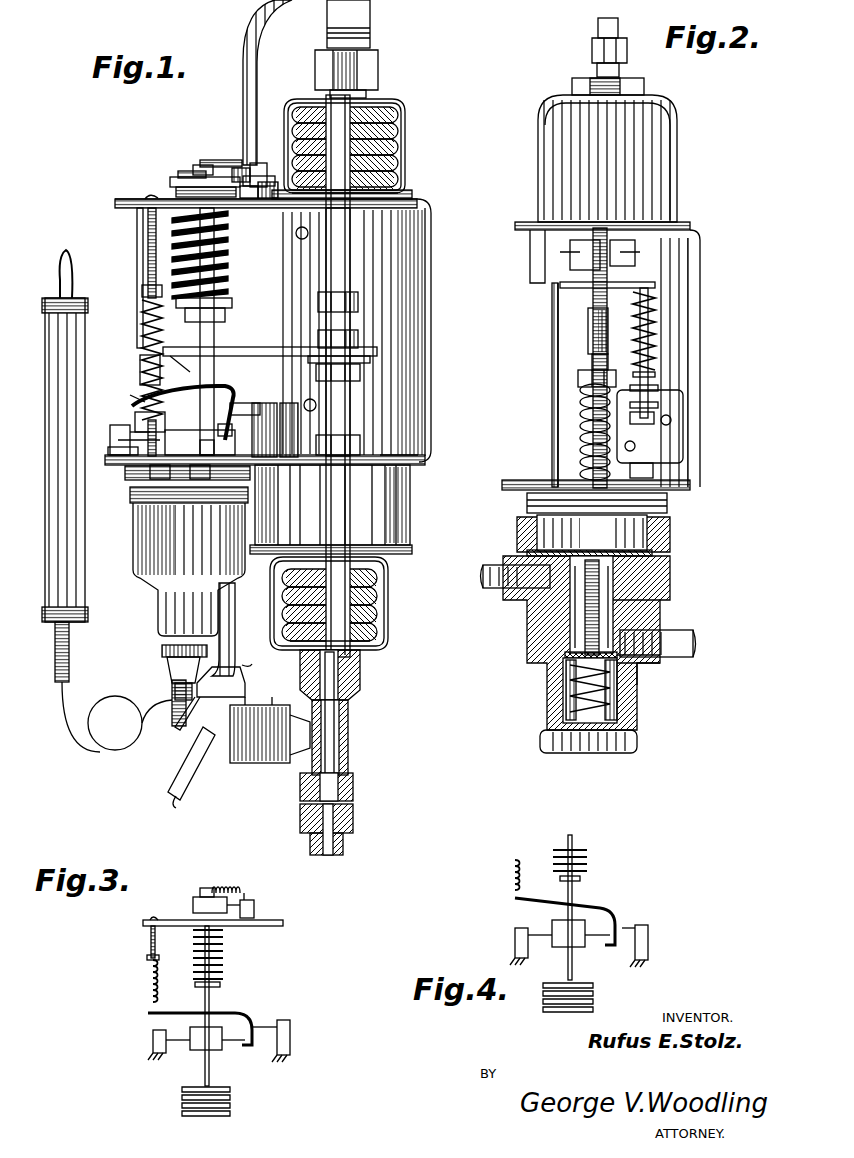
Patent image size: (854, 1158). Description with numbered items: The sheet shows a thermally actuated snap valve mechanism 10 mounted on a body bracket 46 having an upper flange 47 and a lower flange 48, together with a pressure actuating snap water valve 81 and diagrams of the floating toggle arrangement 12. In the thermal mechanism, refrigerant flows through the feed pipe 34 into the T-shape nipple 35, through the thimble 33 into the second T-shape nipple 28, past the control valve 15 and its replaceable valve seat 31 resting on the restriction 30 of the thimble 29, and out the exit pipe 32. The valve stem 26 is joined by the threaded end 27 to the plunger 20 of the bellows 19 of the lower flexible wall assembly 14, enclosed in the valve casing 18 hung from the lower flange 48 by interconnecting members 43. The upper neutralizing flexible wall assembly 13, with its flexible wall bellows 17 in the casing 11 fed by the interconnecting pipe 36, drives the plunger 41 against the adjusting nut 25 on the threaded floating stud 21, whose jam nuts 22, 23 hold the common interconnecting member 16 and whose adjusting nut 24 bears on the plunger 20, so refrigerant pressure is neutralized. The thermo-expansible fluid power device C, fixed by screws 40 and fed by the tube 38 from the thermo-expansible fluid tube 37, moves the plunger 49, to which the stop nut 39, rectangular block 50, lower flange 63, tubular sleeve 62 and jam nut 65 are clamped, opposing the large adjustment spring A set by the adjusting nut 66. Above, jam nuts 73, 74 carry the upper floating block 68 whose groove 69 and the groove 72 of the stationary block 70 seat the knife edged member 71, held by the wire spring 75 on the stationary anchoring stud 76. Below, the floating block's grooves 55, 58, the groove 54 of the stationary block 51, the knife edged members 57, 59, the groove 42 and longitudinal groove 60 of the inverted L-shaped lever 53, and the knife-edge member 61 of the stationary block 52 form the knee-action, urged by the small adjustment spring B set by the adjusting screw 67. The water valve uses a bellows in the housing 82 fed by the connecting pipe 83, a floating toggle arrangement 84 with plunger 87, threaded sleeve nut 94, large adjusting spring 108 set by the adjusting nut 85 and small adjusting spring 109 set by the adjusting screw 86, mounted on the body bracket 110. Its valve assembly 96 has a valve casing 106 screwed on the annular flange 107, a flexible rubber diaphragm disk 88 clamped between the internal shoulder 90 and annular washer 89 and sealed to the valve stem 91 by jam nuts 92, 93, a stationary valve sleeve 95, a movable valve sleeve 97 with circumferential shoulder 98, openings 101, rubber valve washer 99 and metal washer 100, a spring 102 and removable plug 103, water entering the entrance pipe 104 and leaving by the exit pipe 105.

In FIG. 1, the thermally actuated snap valve mechanism 10 is at (420, 310).
In FIG. 1, the casing 11 is at (402, 106).
In FIG. 1, the floating toggle arrangement 12 is at (225, 348).
In FIG. 1, the upper neutralizing flexible wall assembly 13 is at (404, 130).
In FIG. 1, the lower flexible wall assembly 14 is at (386, 600).
In FIG. 1, the control valve 15 is at (334, 772).
In FIG. 1, the common interconnecting member 16 is at (262, 350).
In FIG. 1, the flexible wall bellows 17 is at (396, 158).
In FIG. 1, the valve casing 18 is at (392, 578).
In FIG. 1, the bellows 19 is at (380, 636).
In FIG. 1, the plunger 20 is at (330, 510).
In FIG. 1, the threaded floating stud 21 is at (352, 400).
In FIG. 1, the jam nut 22 is at (362, 366).
In FIG. 1, the jam nut 23 is at (358, 332).
In FIG. 1, the adjusting nut 24 is at (360, 426).
In FIG. 1, the adjusting nut 25 is at (358, 300).
In FIG. 1, the valve stem 26 is at (348, 722).
In FIG. 1, the threaded end 27 is at (362, 660).
In FIG. 1, the second T-shape nipple 28 is at (345, 742).
In FIG. 1, the thimble 29 is at (352, 814).
In FIG. 1, the restriction 30 is at (352, 790).
In FIG. 1, the replaceable valve seat 31 is at (310, 788).
In FIG. 1, the exit pipe 32 is at (345, 840).
In FIG. 1, the thimble 33 is at (258, 760).
In FIG. 1, the feed pipe 34 is at (186, 795).
In FIG. 1, the T-shape nipple 35 is at (178, 730).
In FIG. 1, the interconnecting pipe 36 is at (258, 30).
In FIG. 1, the thermo-expansible fluid tube 37 is at (78, 336).
In FIG. 1, the tube 38 is at (100, 750).
In FIG. 1, the stop nut 39 is at (172, 478).
In FIG. 1, the screws 40 is at (106, 462).
In FIG. 1, the plunger 41 is at (351, 268).
In FIG. 1, the groove 42 is at (215, 444).
In FIG. 1, the interconnecting members 43 is at (410, 502).
In FIG. 1, the body bracket 46 is at (420, 290).
In FIG. 1, the upper flange 47 is at (400, 228).
In FIG. 1, the lower flange 48 is at (390, 455).
In FIG. 1, the plunger 49 is at (190, 478).
In FIG. 1, the rectangular block 50 is at (135, 416).
In FIG. 3, the rectangular block 50 is at (198, 1046).
In FIG. 1, the stationary block 51 is at (116, 450).
In FIG. 4, the stationary block 51 is at (515, 942).
In FIG. 1, the stationary block 52 is at (270, 446).
In FIG. 3, the stationary block 52 is at (290, 1030).
In FIG. 4, the stationary block 52 is at (650, 960).
In FIG. 1, the inverted L-shaped lever 53 is at (232, 390).
In FIG. 3, the inverted L-shaped lever 53 is at (232, 1012).
In FIG. 4, the inverted L-shaped lever 53 is at (618, 892).
In FIG. 1, the groove 54 is at (112, 432).
In FIG. 1, the groove 55 is at (130, 440).
In FIG. 1, the knife edged member 57 is at (135, 432).
In FIG. 3, the knife edged member 57 is at (160, 1030).
In FIG. 4, the knife edged member 57 is at (550, 934).
In FIG. 1, the groove 58 is at (190, 446).
In FIG. 1, the knife-edge member 59 is at (232, 430).
In FIG. 3, the knife-edge member 59 is at (228, 1048).
In FIG. 4, the knife-edge member 59 is at (592, 944).
In FIG. 1, the longitudinal groove 60 is at (250, 404).
In FIG. 1, the knife-edge member 61 is at (262, 414).
In FIG. 1, the tubular sleeve 62 is at (142, 360).
In FIG. 1, the lower flange 63 is at (135, 396).
In FIG. 1, the jam nut 65 is at (226, 320).
In FIG. 1, the adjusting nut 66 is at (232, 302).
In FIG. 1, the adjusting screw 67 is at (146, 198).
In FIG. 3, the adjusting screw 67 is at (152, 918).
In FIG. 1, the upper floating block 68 is at (172, 178).
In FIG. 3, the upper floating block 68 is at (196, 898).
In FIG. 1, the longitudinal groove 69 is at (190, 172).
In FIG. 1, the stationary block 70 is at (266, 200).
In FIG. 1, the knife edged member 71 is at (240, 168).
In FIG. 1, the groove 72 is at (250, 200).
In FIG. 1, the jam nut 73 is at (200, 164).
In FIG. 1, the jam nut 74 is at (178, 190).
In FIG. 1, the wire spring 75 is at (225, 158).
In FIG. 3, the wire spring 75 is at (226, 890).
In FIG. 1, the stationary anchoring stud 76 is at (262, 175).
In FIG. 1, the large adjustment spring A is at (228, 258).
In FIG. 3, the large adjustment spring A is at (222, 970).
In FIG. 4, the large adjustment spring A is at (582, 850).
In FIG. 1, the small adjustment spring B is at (142, 298).
In FIG. 3, the small adjustment spring B is at (150, 988).
In FIG. 4, the small adjustment spring B is at (514, 886).
In FIG. 1, the thermo-expansible fluid power device C is at (134, 544).
In FIG. 3, the thermo-expansible fluid power device C is at (232, 1108).
In FIG. 4, the thermo-expansible fluid power device C is at (594, 1000).
In FIG. 2, the pressure actuating snap water valve 81 is at (684, 346).
In FIG. 2, the housing 82 is at (670, 140).
In FIG. 2, the connecting pipe 83 is at (598, 26).
In FIG. 2, the floating toggle arrangement 84 is at (590, 300).
In FIG. 2, the adjusting nut 85 is at (578, 380).
In FIG. 2, the adjusting screw 86 is at (645, 446).
In FIG. 2, the plunger 87 is at (592, 358).
In FIG. 2, the flexible rubber diaphragm disk 88 is at (640, 582).
In FIG. 2, the annular washer 89 is at (662, 532).
In FIG. 2, the internal shoulder 90 is at (655, 552).
In FIG. 2, the valve stem 91 is at (640, 616).
In FIG. 2, the jam nut 92 is at (605, 536).
In FIG. 2, the jam nut 93 is at (580, 536).
In FIG. 2, the threaded sleeve nut 94 is at (588, 332).
In FIG. 2, the stationary valve sleeve 95 is at (570, 614).
In FIG. 2, the valve assembly 96 is at (640, 682).
In FIG. 2, the movable valve sleeve 97 is at (563, 676).
In FIG. 2, the circumferential shoulder 98 is at (565, 654).
In FIG. 2, the rubber valve washer 99 is at (640, 660).
In FIG. 2, the metal washer 100 is at (617, 690).
In FIG. 2, the openings 101 is at (585, 630).
In FIG. 2, the spring 102 is at (566, 692).
In FIG. 2, the removable plug 103 is at (637, 744).
In FIG. 2, the entrance pipe 104 is at (718, 606).
In FIG. 2, the exit pipe 105 is at (496, 566).
In FIG. 2, the valve casing 106 is at (648, 596).
In FIG. 2, the annular flange 107 is at (668, 508).
In FIG. 2, the large adjusting spring 108 is at (580, 426).
In FIG. 2, the small adjusting spring 109 is at (650, 308).
In FIG. 2, the body bracket 110 is at (675, 372).